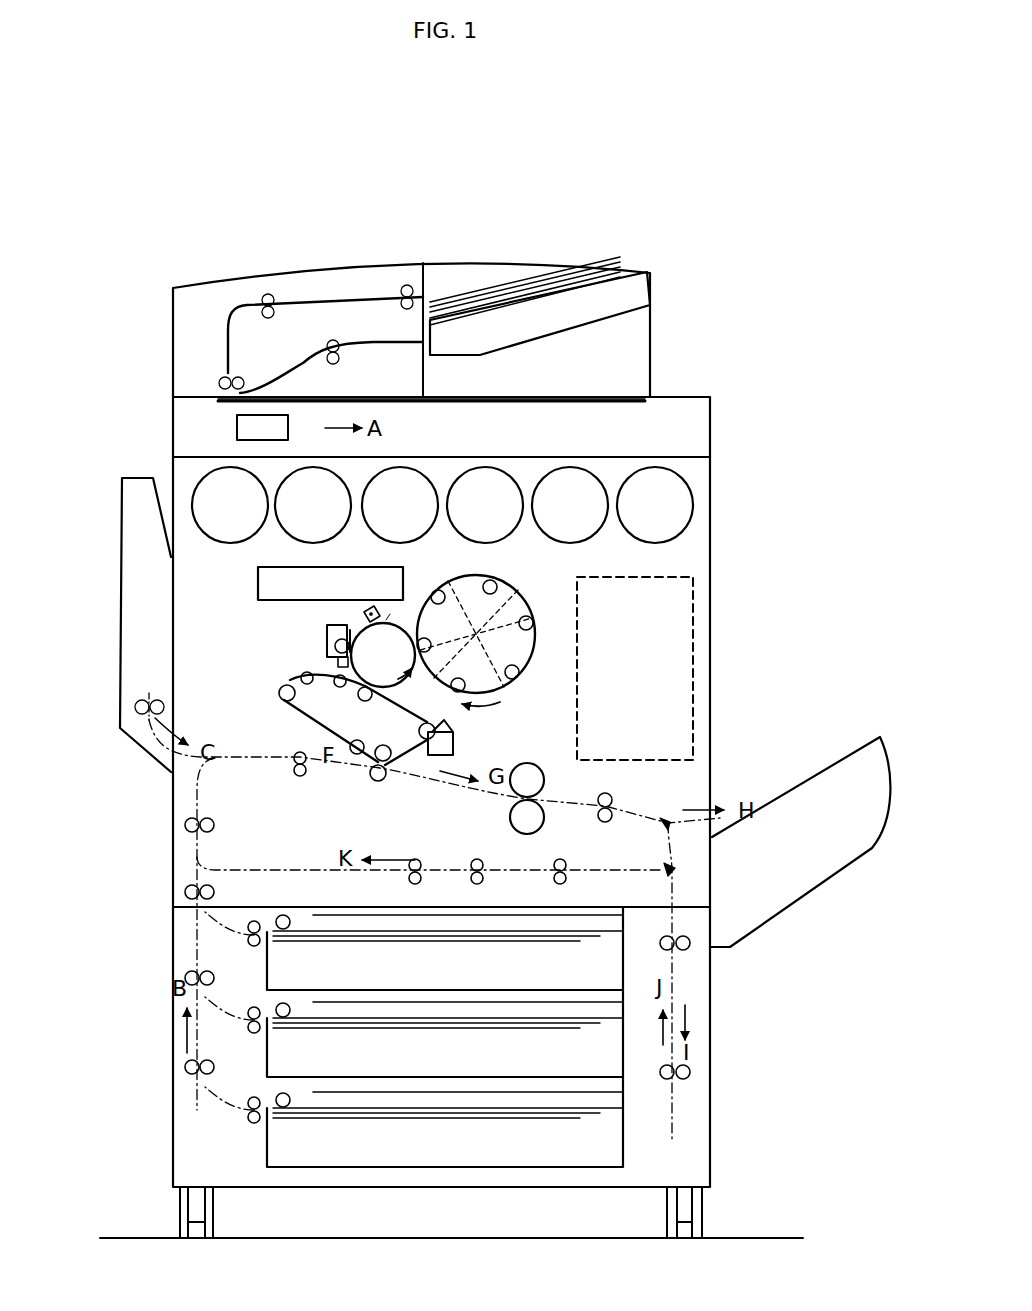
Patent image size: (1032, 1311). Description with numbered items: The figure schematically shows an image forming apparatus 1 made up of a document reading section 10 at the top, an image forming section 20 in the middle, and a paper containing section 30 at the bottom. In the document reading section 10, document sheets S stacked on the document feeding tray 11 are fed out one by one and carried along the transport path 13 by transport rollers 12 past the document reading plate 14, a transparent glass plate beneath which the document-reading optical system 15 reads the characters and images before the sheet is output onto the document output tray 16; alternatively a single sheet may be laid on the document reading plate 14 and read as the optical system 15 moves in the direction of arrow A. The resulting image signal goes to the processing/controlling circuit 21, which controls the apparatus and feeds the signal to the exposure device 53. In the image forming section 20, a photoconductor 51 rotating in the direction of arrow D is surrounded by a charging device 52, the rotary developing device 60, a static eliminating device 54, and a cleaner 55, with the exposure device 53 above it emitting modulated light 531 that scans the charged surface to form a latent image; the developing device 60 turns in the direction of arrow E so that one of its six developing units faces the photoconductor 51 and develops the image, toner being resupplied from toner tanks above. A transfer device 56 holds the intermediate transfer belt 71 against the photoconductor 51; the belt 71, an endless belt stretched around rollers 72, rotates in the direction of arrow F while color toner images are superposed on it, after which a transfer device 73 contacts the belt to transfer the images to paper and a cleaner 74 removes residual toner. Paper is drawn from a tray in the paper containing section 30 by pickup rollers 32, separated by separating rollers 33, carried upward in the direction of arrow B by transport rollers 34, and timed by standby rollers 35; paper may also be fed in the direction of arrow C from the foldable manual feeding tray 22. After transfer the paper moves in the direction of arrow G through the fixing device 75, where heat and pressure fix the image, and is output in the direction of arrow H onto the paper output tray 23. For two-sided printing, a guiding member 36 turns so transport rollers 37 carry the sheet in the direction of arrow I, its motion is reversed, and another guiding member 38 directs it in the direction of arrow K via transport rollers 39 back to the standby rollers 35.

The image forming apparatus 1 is at (755, 190).
The document reading section 10 is at (683, 325).
The document feeding tray 11 is at (520, 305).
The transport rollers 12 is at (268, 296).
The transport path 13 is at (228, 340).
The document reading plate 14 is at (620, 397).
The document-reading optical system 15 is at (237, 428).
The document output tray 16 is at (560, 310).
The document sheets S is at (490, 290).
The image forming section 20 is at (733, 608).
The processing/controlling circuit 21 is at (693, 660).
The manual feeding tray 22 is at (122, 560).
The paper output tray 23 is at (835, 762).
The paper containing section 30 is at (735, 1045).
The pickup rollers 32 is at (283, 914).
The separating rollers 33 is at (250, 922).
The transport rollers 34 is at (612, 805).
The standby rollers 35 is at (295, 760).
The guiding member 36 is at (668, 818).
The transport rollers 37 is at (690, 950).
The guiding member 38 is at (676, 868).
The transport rollers 39 is at (565, 858).
The photoconductor 51 is at (400, 683).
The charging device 52 is at (364, 614).
The exposure device 53 is at (258, 583).
The light 531 is at (388, 616).
The static eliminating device 54 is at (337, 660).
The cleaner 55 is at (330, 640).
The transfer device 56 is at (357, 740).
The developing device 60 is at (547, 648).
The intermediate transfer belt 71 is at (280, 706).
The rollers 72 is at (302, 674).
The transfer device 73 is at (383, 781).
The cleaner 74 is at (453, 745).
The fixing device 75 is at (505, 812).